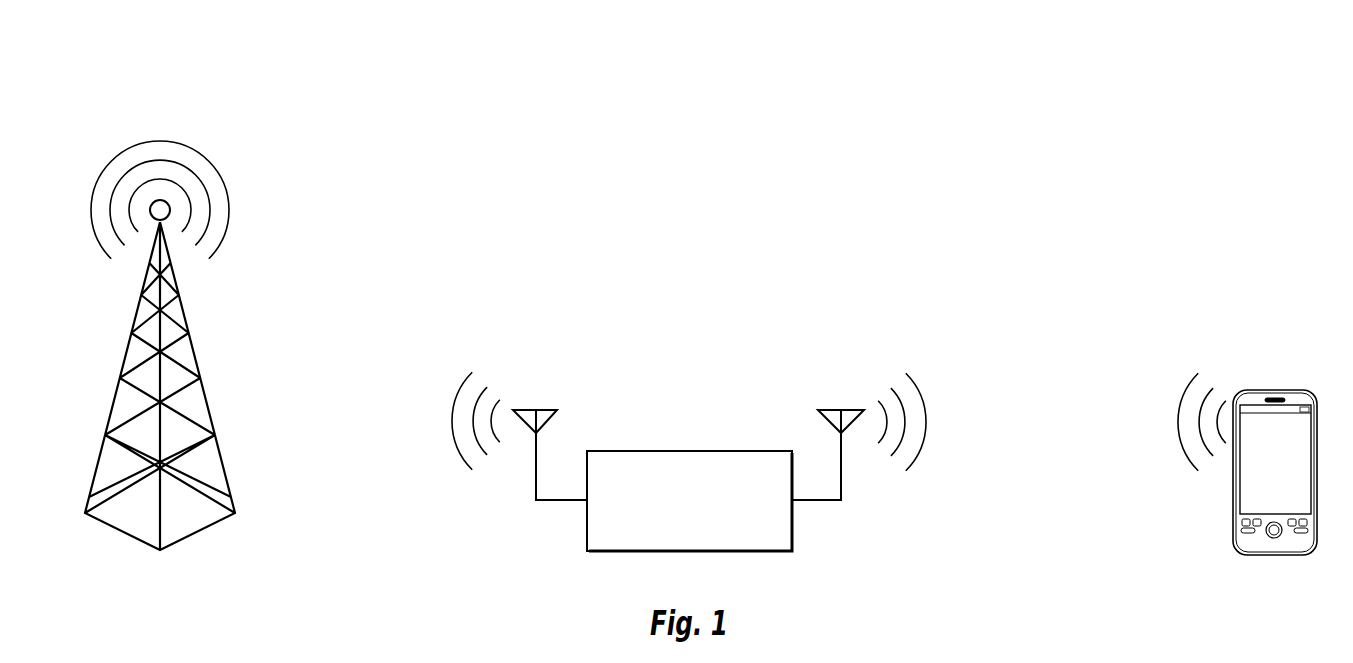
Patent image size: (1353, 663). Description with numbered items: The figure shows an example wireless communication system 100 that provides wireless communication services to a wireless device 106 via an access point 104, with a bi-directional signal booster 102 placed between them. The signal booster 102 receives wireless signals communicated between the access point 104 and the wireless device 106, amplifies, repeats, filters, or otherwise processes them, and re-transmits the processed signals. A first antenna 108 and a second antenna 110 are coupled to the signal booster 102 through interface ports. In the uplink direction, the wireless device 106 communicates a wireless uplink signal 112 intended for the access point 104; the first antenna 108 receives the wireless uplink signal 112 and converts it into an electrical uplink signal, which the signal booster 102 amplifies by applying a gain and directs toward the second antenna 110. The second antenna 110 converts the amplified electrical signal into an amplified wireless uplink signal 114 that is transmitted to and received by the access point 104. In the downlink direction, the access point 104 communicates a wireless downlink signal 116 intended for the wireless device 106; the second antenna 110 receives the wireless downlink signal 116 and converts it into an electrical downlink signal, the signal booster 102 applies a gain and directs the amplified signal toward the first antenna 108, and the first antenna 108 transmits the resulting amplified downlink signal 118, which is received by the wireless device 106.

The wireless communication system 100 is at (889, 108).
The bi-directional signal booster 102 is at (704, 528).
The access point 104 is at (198, 362).
The wireless device 106 is at (1287, 390).
The first antenna 108 is at (833, 410).
The second antenna 110 is at (543, 410).
The wireless uplink signal 112 is at (1178, 380).
The amplified wireless uplink signal 114 is at (454, 377).
The wireless downlink signal 116 is at (229, 160).
The amplified downlink signal 118 is at (925, 378).